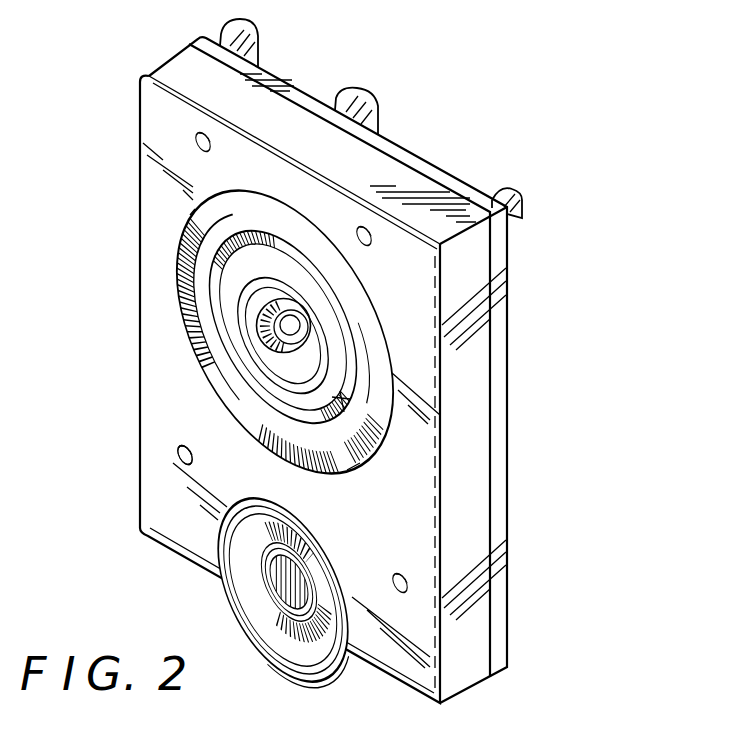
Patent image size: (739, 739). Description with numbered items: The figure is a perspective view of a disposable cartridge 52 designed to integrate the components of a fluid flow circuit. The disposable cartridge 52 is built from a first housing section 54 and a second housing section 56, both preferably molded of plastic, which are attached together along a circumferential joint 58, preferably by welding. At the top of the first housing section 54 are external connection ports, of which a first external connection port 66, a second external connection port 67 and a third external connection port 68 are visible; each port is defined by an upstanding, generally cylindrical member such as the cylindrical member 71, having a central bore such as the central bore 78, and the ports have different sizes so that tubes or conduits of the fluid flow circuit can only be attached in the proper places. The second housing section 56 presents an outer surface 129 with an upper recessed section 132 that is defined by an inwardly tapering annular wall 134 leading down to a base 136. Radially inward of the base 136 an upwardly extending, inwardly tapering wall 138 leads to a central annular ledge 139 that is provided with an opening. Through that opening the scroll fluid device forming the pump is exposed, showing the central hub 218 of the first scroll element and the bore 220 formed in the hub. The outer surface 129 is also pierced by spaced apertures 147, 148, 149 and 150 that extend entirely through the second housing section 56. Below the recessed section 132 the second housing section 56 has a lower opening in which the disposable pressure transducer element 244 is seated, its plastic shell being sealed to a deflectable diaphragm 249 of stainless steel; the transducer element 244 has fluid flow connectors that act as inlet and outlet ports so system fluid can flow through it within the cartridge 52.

The disposable cartridge 52 is at (502, 130).
The first housing section 54 is at (511, 376).
The second housing section 56 is at (136, 322).
The circumferential joint 58 is at (491, 452).
The first external connection port 66 is at (523, 198).
The second external connection port 67 is at (373, 97).
The third external connection port 68 is at (257, 40).
The aperture 147 is at (196, 140).
The aperture 148 is at (368, 229).
The aperture 149 is at (408, 583).
The central hub 218 is at (176, 449).
The aperture 150 is at (177, 463).
The outer surface 129 is at (303, 361).
The upper recessed section 132 is at (358, 280).
The annular wall 134 is at (176, 264).
The base 136 is at (212, 228).
The wall 138 is at (353, 333).
The central annular ledge 139 is at (340, 398).
The bore 220 is at (257, 331).
The pressure transducer element 244 is at (249, 607).
The deflectable diaphragm 249 is at (252, 563).
The cylindrical member 71 is at (357, 735).
The central bore 78 is at (659, 729).